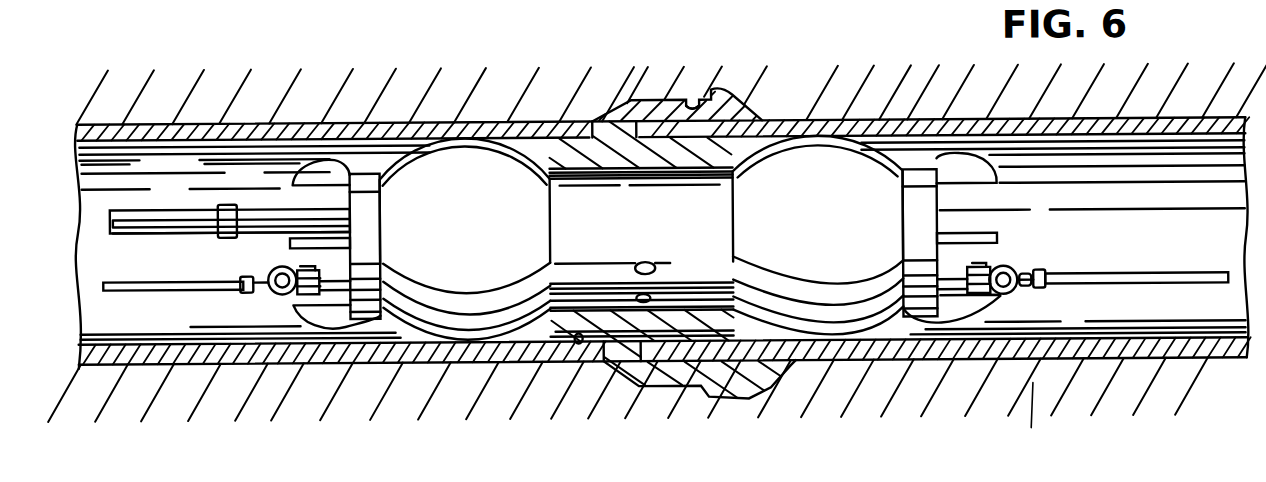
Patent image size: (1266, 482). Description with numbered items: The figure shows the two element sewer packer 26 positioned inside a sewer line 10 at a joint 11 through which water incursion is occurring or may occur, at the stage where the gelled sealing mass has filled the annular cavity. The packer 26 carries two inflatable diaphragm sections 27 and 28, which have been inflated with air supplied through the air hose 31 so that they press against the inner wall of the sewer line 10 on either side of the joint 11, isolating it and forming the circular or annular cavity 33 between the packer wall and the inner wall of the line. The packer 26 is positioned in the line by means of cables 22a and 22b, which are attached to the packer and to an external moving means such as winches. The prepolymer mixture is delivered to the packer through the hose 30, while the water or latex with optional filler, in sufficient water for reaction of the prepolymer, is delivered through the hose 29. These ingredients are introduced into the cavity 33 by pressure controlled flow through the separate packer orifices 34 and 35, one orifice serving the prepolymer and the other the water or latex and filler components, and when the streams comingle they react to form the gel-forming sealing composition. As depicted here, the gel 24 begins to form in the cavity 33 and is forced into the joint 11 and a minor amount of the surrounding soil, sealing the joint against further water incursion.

The sewer line 10 is at (594, 120).
The joint 11 is at (692, 98).
The gel 24 is at (740, 100).
The sewer packer 26 is at (524, 188).
The inflatable diaphragm section 27 is at (472, 172).
The inflatable diaphragm section 28 is at (880, 148).
The hose 29 is at (110, 229).
The hose 30 is at (155, 208).
The air hose 31 is at (113, 220).
The cable 22a is at (118, 289).
The cable 22b is at (1135, 273).
The cavity 33 is at (578, 343).
The packer orifice 34 is at (640, 262).
The packer orifice 35 is at (652, 296).